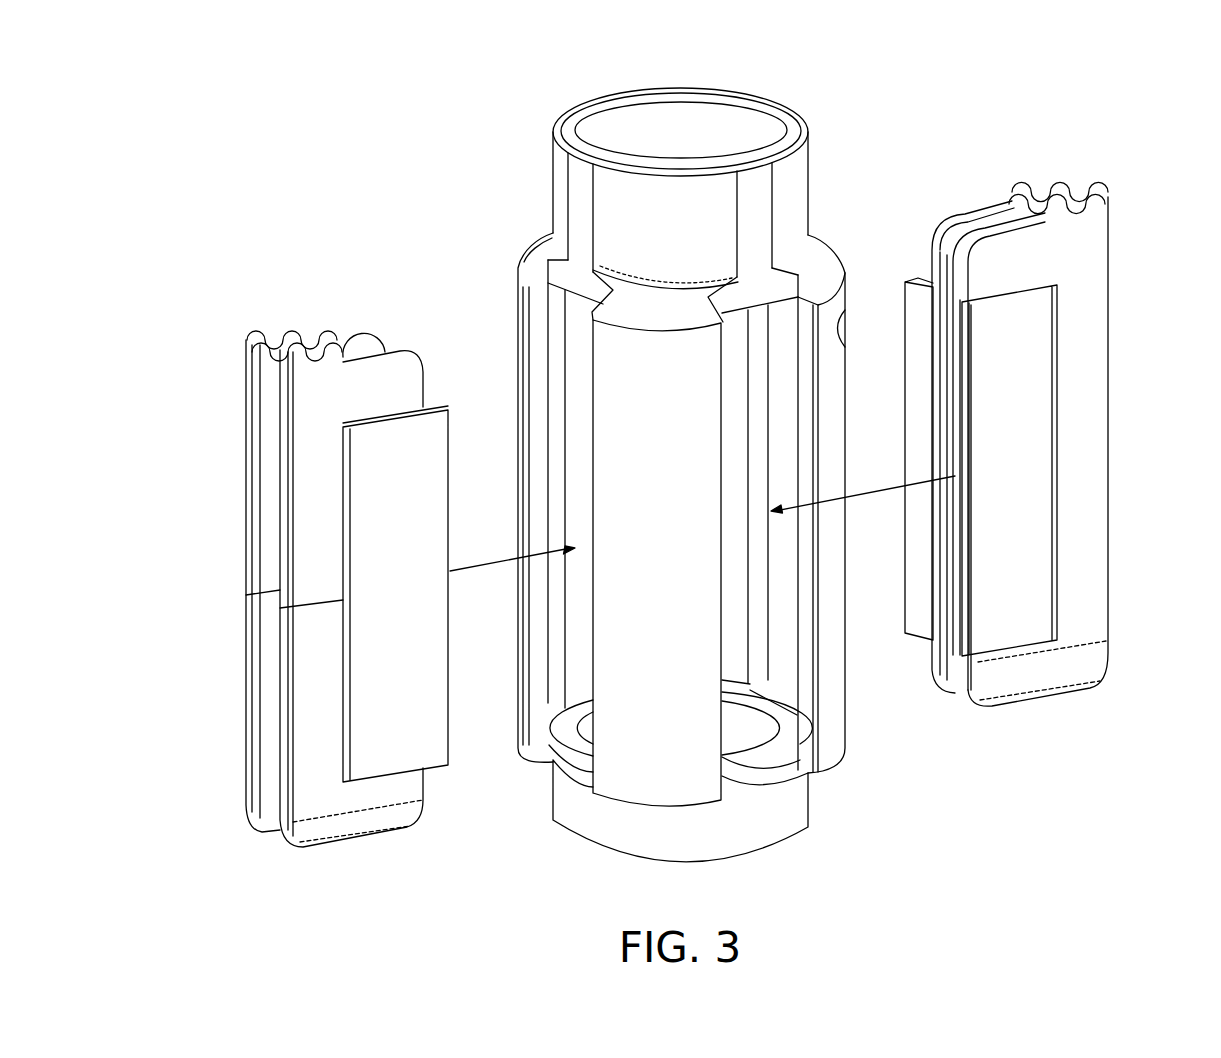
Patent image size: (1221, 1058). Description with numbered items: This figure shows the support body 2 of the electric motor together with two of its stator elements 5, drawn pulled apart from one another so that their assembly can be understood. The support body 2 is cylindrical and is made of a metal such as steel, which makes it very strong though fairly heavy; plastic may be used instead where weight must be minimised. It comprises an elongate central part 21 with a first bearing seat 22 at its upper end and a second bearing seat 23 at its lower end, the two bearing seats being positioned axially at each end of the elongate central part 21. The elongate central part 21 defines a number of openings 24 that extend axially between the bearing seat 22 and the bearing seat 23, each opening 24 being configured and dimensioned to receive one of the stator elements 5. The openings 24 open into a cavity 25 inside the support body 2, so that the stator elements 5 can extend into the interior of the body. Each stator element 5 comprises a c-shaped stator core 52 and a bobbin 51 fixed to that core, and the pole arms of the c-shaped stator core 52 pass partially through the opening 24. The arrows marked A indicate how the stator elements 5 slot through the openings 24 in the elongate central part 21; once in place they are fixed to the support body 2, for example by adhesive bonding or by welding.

The support body 2 is at (760, 72).
The elongate central part 21 is at (618, 397).
The first bearing seat 22 is at (618, 200).
The second bearing seat 23 is at (573, 823).
The openings 24 is at (566, 737).
The cavity 25 is at (748, 727).
The stator element 5 is at (287, 303).
The bobbin 51 is at (316, 508).
The c-shaped stator core 52 is at (360, 655).